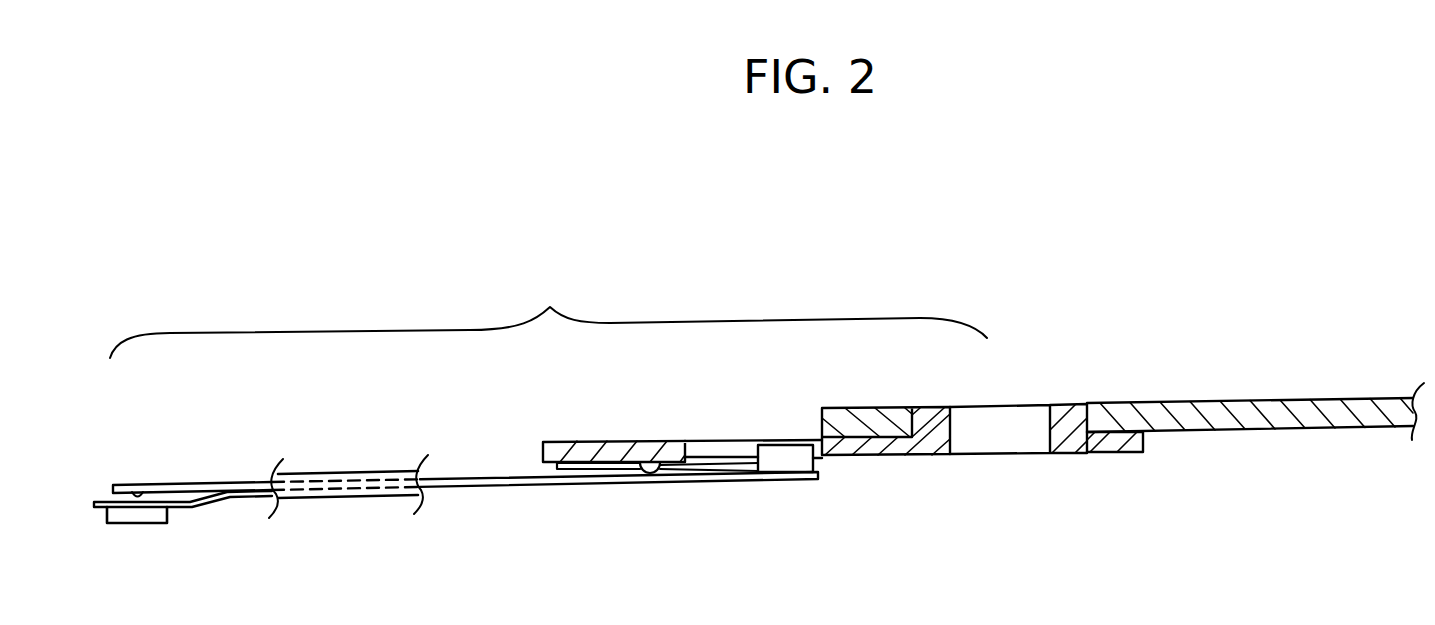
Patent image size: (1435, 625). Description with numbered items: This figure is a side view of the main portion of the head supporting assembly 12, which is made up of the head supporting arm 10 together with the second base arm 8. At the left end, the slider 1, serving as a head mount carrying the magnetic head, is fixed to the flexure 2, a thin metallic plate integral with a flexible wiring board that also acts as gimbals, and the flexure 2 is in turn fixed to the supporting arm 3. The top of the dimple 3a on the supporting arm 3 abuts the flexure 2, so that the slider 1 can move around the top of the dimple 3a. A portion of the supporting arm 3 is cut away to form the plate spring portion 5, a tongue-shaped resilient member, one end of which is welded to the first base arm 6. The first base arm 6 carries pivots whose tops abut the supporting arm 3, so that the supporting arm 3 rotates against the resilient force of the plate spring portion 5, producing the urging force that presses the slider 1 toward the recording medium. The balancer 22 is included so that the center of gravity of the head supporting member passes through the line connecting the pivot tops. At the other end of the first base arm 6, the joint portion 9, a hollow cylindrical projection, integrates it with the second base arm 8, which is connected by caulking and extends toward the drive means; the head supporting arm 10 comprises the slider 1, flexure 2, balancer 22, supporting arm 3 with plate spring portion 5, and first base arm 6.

The slider 1 is at (147, 517).
The flexure 2 is at (203, 493).
The supporting arm 3 is at (488, 482).
The dimple 3a is at (138, 490).
The plate spring portion 5 is at (687, 470).
The first base arm 6 is at (642, 455).
The second base arm 8 is at (1255, 418).
The joint portion 9 is at (925, 422).
The head supporting arm 10 is at (563, 293).
The head supporting assembly 12 is at (335, 483).
The balancer 22 is at (788, 458).